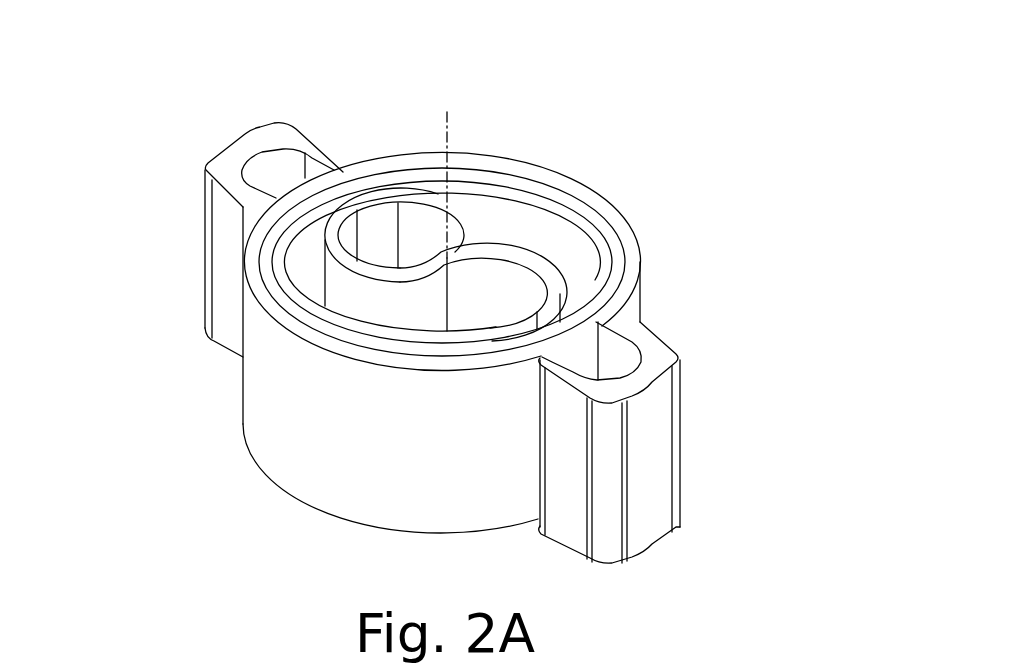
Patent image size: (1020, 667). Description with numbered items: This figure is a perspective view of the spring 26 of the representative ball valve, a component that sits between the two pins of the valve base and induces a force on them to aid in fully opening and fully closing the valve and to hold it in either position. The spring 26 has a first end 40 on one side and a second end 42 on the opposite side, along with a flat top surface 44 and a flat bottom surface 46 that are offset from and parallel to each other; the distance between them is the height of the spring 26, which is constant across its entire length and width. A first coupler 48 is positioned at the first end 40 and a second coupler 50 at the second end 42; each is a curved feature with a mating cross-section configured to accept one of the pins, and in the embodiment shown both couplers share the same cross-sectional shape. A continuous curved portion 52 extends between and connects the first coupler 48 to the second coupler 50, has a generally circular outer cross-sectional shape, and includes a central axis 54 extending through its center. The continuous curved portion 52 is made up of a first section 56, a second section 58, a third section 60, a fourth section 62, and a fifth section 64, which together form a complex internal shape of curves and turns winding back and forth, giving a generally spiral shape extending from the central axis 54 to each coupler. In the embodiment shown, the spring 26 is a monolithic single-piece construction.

The spring 26 is at (153, 97).
The first end 40 is at (213, 201).
The second end 42 is at (674, 434).
The top surface 44 is at (611, 202).
The bottom surface 46 is at (349, 528).
The first coupler 48 is at (266, 163).
The second coupler 50 is at (632, 377).
The continuous curved portion 52 is at (550, 147).
The central axis 54 is at (445, 115).
The first section 56 is at (254, 292).
The second section 58 is at (481, 364).
The third section 60 is at (598, 243).
The fourth section 62 is at (414, 192).
The fifth section 64 is at (347, 259).